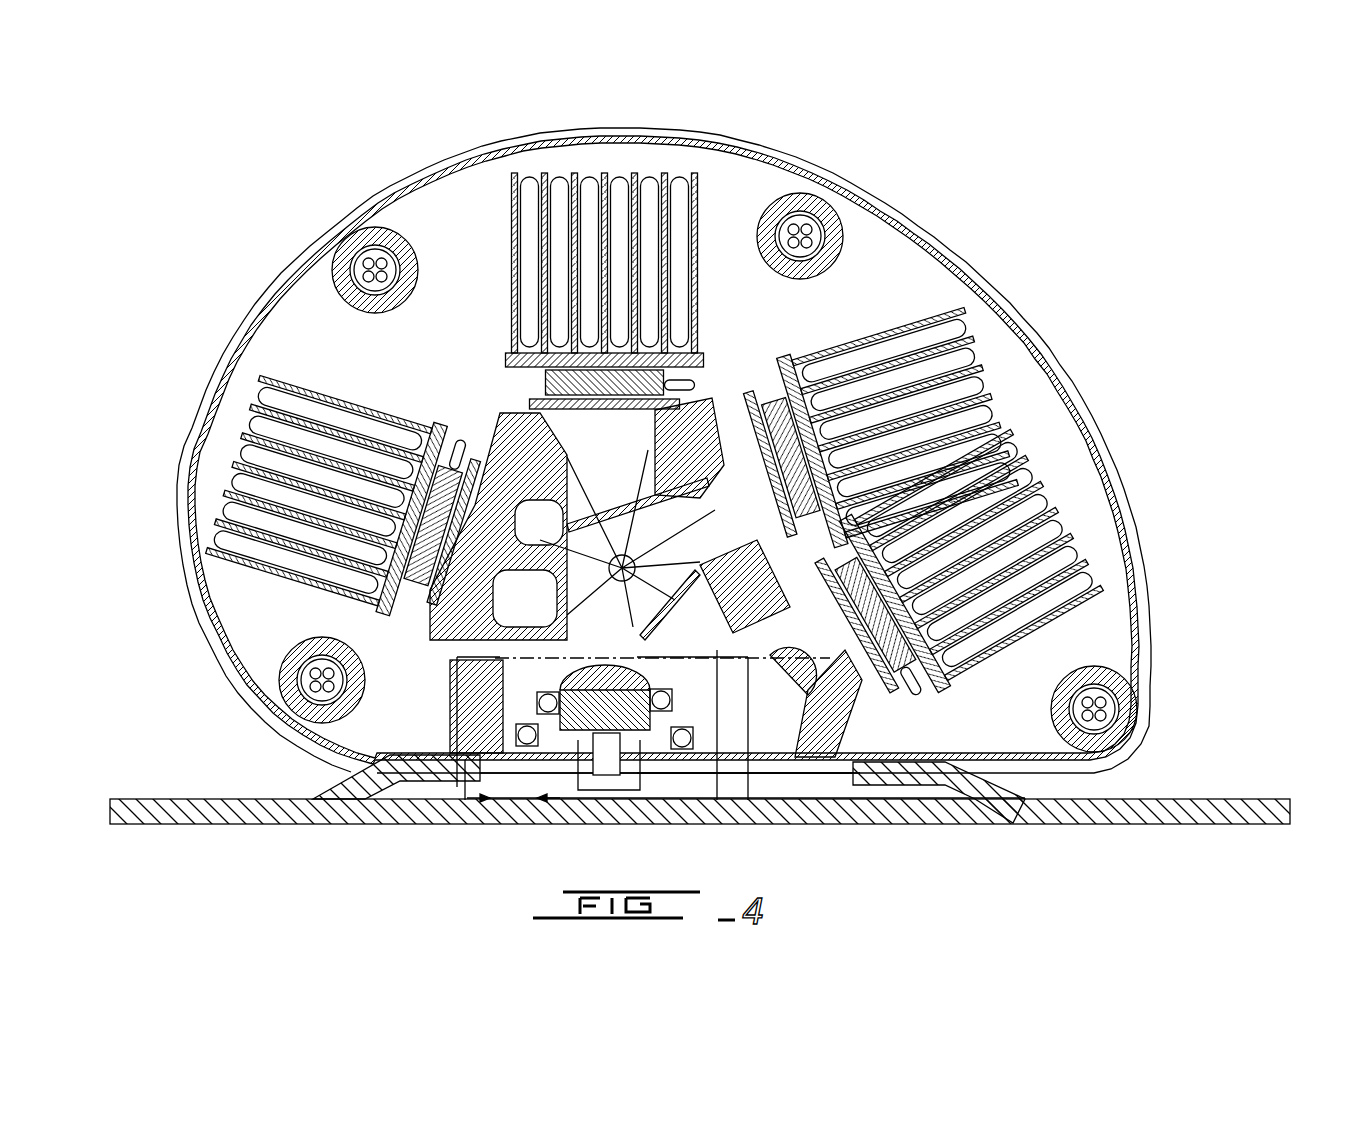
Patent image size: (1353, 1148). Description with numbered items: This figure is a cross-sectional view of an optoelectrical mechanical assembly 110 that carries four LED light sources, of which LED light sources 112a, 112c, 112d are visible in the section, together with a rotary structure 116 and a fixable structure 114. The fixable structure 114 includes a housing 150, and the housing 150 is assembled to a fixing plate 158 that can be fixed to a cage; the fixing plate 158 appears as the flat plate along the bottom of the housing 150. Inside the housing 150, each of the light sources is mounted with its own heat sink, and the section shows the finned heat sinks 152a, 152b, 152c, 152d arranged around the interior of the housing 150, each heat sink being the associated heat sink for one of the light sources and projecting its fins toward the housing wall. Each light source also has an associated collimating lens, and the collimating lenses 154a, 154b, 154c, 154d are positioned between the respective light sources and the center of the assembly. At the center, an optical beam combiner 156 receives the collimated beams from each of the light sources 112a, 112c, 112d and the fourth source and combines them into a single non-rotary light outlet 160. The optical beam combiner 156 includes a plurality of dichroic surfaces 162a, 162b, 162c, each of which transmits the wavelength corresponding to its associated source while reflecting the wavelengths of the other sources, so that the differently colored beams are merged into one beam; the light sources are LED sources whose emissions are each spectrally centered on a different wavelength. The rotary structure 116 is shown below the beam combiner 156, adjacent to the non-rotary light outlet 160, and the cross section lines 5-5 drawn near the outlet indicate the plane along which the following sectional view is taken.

The optoelectrical mechanical assembly 110 is at (713, 448).
The fixable structure 114 is at (880, 207).
The housing 150 is at (1105, 468).
The fixing plate 158 is at (1215, 799).
The optical beam combiner 156 is at (462, 768).
The non-rotary light outlet 160 is at (472, 785).
The rotary structure 116 is at (572, 765).
The cross section lines 5-5 is at (513, 800).
The heat sink 152a is at (945, 645).
The heat sink 152b is at (878, 332).
The heat sink 152c is at (513, 225).
The heat sink 152d is at (262, 375).
The collimating lens 154a is at (827, 740).
The collimating lens 154b is at (740, 395).
The collimating lens 154c is at (545, 385).
The collimating lens 154d is at (440, 650).
The dichroic surface 162a is at (425, 740).
The dichroic surface 162b is at (690, 380).
The dichroic surface 162c is at (713, 740).
The LED light source 112a is at (1112, 700).
The LED light source 112c is at (503, 410).
The LED light source 112d is at (790, 400).